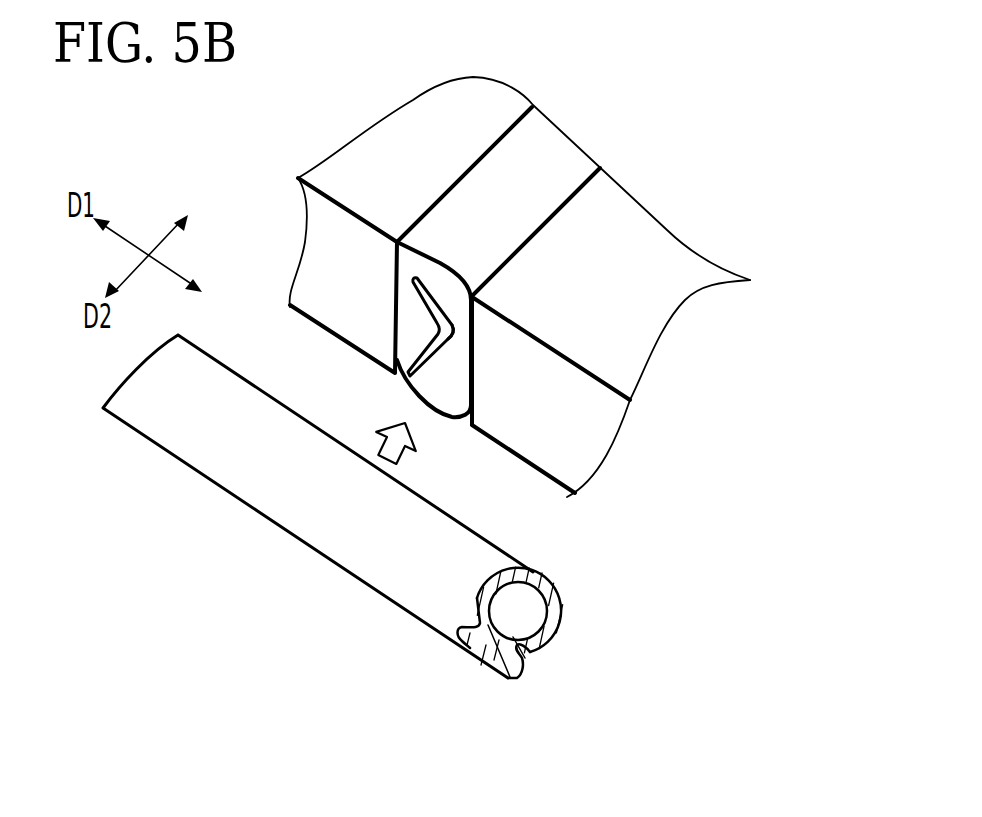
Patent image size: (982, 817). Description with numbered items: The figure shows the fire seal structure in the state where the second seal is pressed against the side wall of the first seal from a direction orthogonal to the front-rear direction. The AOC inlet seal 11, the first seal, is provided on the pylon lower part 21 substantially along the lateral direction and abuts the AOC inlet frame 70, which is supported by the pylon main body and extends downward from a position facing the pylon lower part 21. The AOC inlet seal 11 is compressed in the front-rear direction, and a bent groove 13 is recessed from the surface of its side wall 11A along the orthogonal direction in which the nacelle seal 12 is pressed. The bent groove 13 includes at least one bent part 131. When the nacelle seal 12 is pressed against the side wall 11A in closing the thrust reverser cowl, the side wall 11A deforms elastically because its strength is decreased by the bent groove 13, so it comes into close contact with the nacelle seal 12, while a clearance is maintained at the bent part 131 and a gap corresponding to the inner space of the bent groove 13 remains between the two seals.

The AOC inlet frame 70 is at (377, 127).
The AOC inlet seal 11 is at (555, 142).
The side wall 11A is at (437, 271).
The bent groove 13 is at (438, 318).
The bent part 131 is at (453, 337).
The pylon lower part 21 is at (667, 230).
The nacelle seal 12 is at (500, 547).